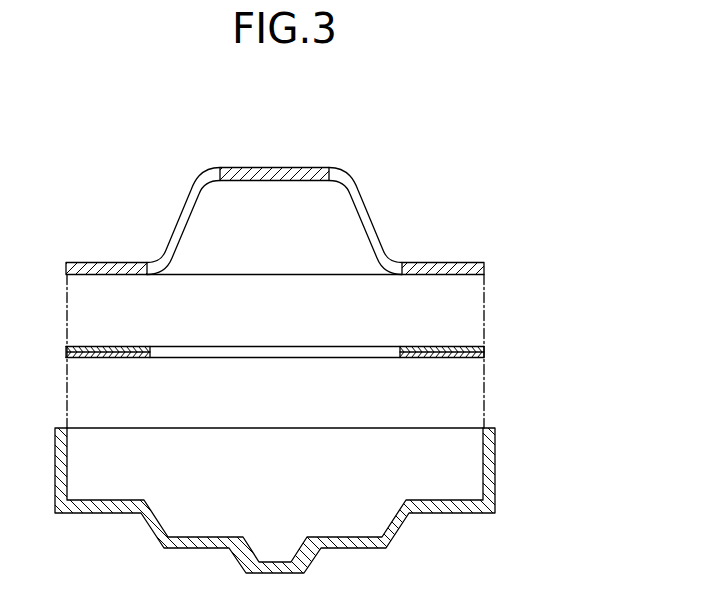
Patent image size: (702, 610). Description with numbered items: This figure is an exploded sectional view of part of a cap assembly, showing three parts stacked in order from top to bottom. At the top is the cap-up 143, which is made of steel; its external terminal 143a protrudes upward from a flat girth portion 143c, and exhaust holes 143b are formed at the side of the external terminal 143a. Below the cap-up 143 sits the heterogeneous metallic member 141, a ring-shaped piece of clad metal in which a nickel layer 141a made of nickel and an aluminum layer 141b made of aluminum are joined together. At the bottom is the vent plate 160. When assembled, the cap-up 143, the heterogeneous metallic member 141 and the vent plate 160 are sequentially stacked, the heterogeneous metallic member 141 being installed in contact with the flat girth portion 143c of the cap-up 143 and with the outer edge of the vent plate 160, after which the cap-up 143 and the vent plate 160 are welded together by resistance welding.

The cap-up 143 is at (340, 196).
The external terminal 143a is at (282, 166).
The exhaust holes 143b is at (370, 205).
The flat girth portion 143c is at (441, 262).
The heterogeneous metallic member 141 is at (315, 353).
The nickel layer 141a is at (462, 346).
The aluminum layer 141b is at (462, 358).
The vent plate 160 is at (490, 461).